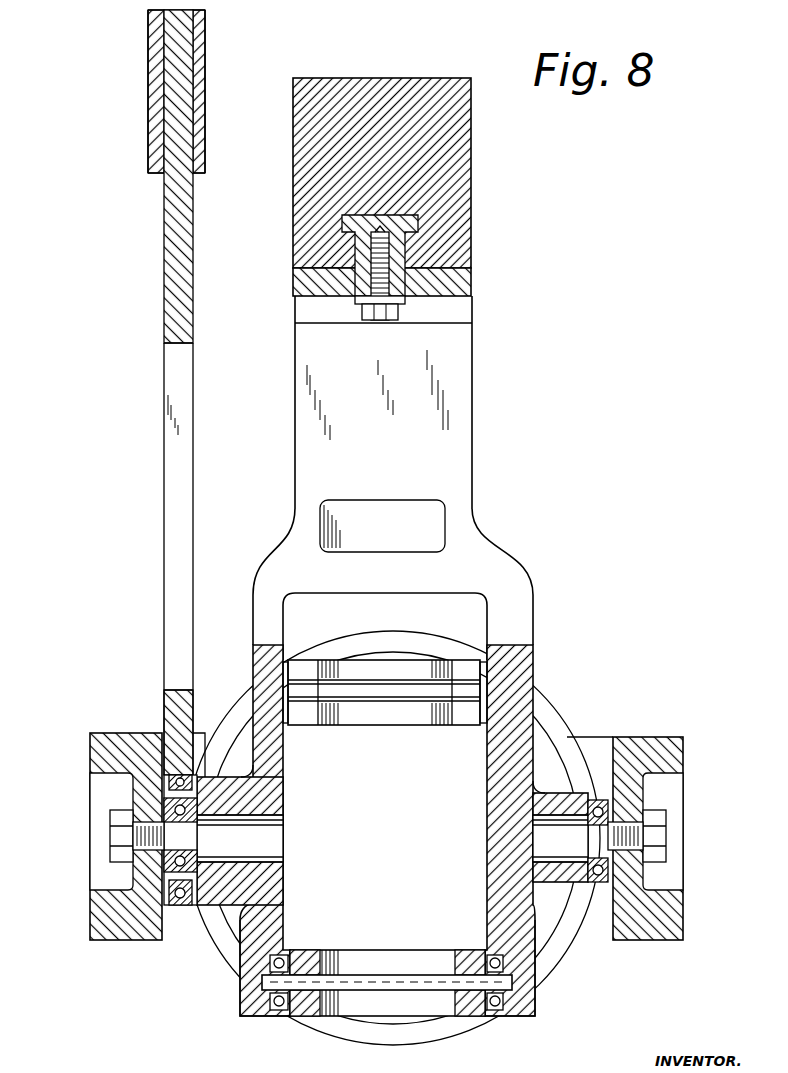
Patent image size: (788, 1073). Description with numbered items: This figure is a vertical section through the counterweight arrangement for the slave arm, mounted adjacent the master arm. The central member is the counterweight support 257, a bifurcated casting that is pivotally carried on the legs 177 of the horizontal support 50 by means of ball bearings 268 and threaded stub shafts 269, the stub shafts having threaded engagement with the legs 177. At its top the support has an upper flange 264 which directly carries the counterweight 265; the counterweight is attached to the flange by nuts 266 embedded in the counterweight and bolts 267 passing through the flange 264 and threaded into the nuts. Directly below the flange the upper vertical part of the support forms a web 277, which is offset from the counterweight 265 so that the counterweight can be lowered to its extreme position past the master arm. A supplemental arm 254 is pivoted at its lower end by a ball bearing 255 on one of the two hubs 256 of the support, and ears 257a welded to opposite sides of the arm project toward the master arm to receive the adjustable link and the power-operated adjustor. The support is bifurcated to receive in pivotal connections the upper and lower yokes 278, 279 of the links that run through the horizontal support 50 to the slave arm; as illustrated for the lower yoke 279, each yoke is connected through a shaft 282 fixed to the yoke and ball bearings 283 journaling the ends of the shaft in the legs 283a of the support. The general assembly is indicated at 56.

The horizontal support 50 is at (545, 726).
The drive assembly 56 is at (544, 576).
The legs 177 is at (107, 912).
The supplemental arm 254 is at (170, 444).
The ball bearing 255 is at (178, 905).
The hubs 256 is at (236, 940).
The counterweight support 257 is at (506, 542).
The ears 257a is at (148, 142).
The upper flange 264 is at (455, 281).
The counterweight 265 is at (446, 171).
The nuts 266 is at (388, 257).
The bolts 267 is at (386, 319).
The ball bearings 268 is at (197, 854).
The threaded stub shafts 269 is at (108, 833).
The web 277 is at (443, 408).
The upper yoke 278 is at (388, 724).
The lower yoke 279 is at (305, 1013).
The shaft 282 is at (430, 692).
The ball bearings 283 is at (243, 992).
The legs 283a is at (262, 650).